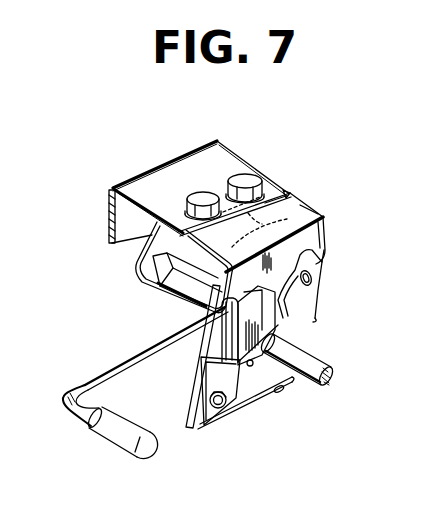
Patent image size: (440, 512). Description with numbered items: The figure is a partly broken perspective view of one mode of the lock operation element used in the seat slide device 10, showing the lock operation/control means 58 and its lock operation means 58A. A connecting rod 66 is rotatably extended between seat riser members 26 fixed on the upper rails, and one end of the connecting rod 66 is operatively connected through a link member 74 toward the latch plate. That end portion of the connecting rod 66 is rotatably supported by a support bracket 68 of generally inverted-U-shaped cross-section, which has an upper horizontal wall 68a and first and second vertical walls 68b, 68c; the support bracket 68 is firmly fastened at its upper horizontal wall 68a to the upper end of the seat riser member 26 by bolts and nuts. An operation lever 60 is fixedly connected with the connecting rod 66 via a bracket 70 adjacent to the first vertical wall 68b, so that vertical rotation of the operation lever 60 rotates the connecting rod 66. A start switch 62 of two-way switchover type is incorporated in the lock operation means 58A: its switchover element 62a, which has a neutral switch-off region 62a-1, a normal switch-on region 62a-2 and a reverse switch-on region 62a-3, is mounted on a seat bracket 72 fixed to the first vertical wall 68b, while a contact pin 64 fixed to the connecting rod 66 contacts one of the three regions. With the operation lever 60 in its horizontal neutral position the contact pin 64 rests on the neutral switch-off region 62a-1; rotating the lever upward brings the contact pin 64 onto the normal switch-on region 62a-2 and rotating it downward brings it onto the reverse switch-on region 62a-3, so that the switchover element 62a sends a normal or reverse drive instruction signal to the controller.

The apparatus 10 is at (347, 161).
The seat riser member 26 is at (170, 177).
The lock operation/control means 58 is at (276, 138).
The lock operation means 58A is at (340, 271).
The operation lever 60 is at (107, 368).
The start switch 62 is at (256, 418).
The switchover element 62a is at (212, 388).
The neutral switch-off region 62a-1 is at (198, 321).
The normal switch-on region 62a-2 is at (195, 330).
The reverse switch-on region 62a-3 is at (207, 352).
The contact pin 64 is at (240, 400).
The connecting rod 66 is at (323, 365).
The support bracket 68 is at (297, 210).
The upper horizontal wall 68a is at (289, 191).
The first vertical wall 68b is at (312, 247).
The second vertical wall 68c is at (140, 250).
The bracket 70 is at (290, 313).
The seat bracket 72 is at (310, 332).
The link member 74 is at (313, 213).